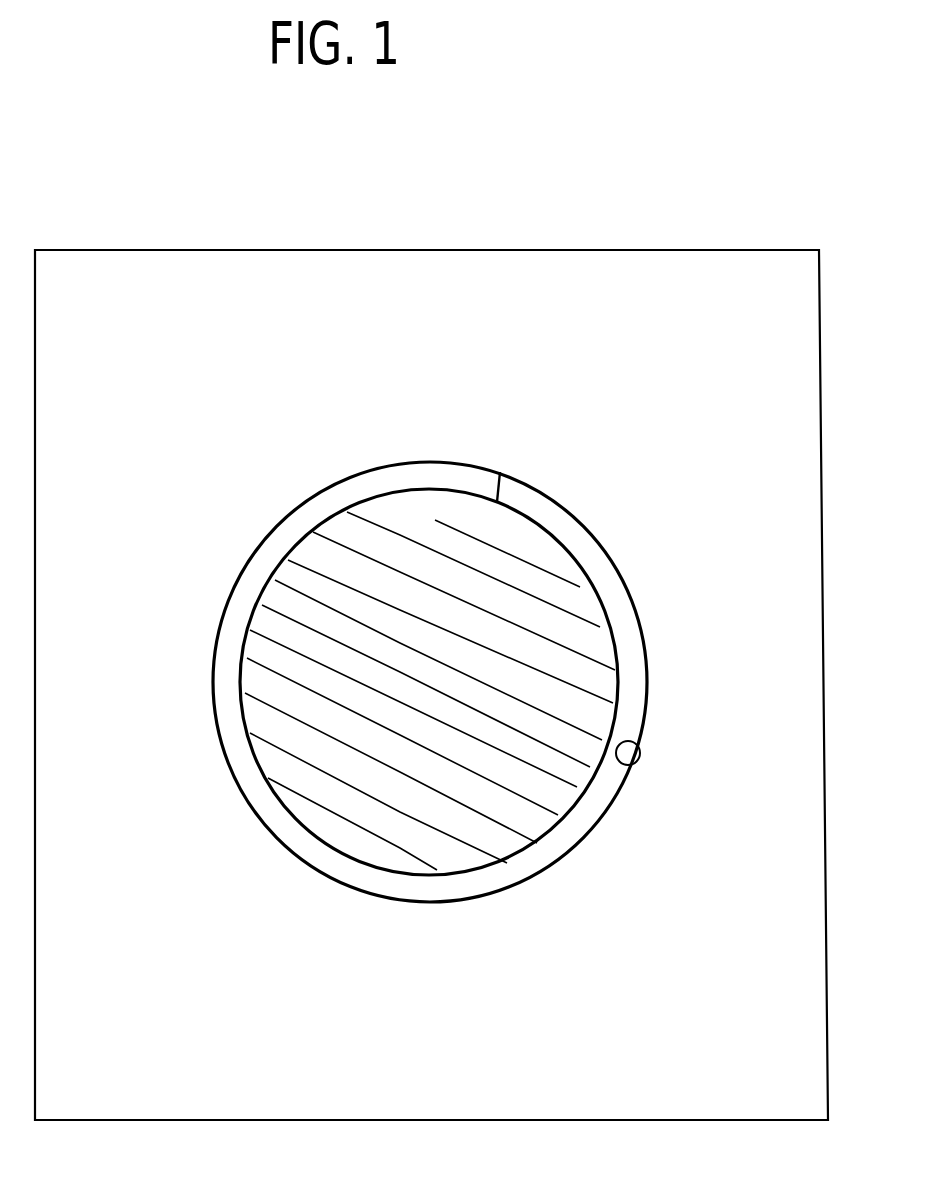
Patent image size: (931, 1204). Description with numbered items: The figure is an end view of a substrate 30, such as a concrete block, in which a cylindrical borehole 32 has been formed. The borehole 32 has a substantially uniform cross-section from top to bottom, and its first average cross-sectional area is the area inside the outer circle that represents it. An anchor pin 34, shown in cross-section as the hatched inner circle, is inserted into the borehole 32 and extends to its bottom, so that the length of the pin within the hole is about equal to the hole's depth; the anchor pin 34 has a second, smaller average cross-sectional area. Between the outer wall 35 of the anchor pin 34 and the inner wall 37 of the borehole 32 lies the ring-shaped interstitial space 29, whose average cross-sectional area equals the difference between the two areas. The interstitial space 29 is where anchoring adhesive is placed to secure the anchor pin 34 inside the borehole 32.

The substrate 30 is at (635, 253).
The borehole 32 is at (647, 680).
The anchor pin 34 is at (547, 573).
The outer wall of anchor pin 35 is at (500, 472).
The inner wall of borehole 37 is at (640, 747).
The interstitial space 29 is at (548, 843).